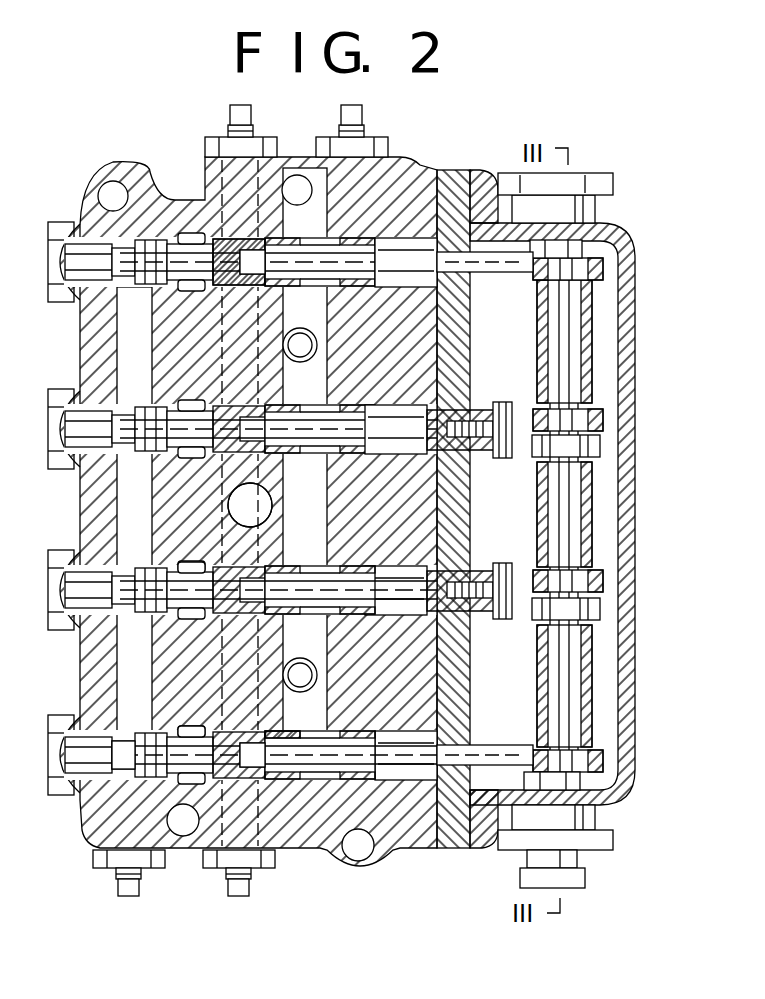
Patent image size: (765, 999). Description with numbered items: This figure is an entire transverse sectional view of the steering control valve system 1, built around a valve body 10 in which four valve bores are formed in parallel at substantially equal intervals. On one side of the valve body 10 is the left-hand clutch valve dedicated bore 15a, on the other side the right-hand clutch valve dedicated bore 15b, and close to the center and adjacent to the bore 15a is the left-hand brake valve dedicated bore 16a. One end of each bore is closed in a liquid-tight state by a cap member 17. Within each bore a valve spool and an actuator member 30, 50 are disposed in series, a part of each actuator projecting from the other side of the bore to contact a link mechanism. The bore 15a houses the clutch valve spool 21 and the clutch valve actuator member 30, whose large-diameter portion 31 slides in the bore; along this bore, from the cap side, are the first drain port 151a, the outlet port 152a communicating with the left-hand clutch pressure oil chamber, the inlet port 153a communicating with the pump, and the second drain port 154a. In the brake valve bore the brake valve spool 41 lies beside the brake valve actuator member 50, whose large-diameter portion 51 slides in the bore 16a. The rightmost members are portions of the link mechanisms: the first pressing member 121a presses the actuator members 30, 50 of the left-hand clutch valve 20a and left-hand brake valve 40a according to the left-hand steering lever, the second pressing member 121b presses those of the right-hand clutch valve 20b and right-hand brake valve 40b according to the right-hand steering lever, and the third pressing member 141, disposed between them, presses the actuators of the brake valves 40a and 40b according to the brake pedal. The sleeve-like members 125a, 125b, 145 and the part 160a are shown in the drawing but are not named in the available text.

The fuel injection pump 1 is at (420, 160).
The valve body 10 is at (425, 170).
The right-hand clutch valve 20b is at (213, 220).
The left-hand clutch valve 20a is at (262, 790).
The clutch valve actuator member 30 is at (404, 238).
The large-diameter portion 31 is at (412, 767).
The brake valve actuator member 50 is at (400, 405).
The large-diameter portion 51 is at (402, 602).
The cap member 17 is at (58, 296).
The right-hand clutch valve dedicated bore 15b is at (205, 287).
The left-hand clutch valve dedicated bore 15a is at (363, 780).
The right-hand brake valve 40b is at (187, 405).
The left-hand brake valve 40a is at (190, 620).
The brake valve spool 41 is at (194, 602).
The clutch valve spool 21 is at (236, 755).
The left-hand brake valve dedicated bore 16a is at (213, 565).
The pin 160a is at (177, 567).
The outlet port 152a is at (176, 722).
The inlet port 153a is at (230, 724).
The second drain port 154a is at (307, 782).
The first drain port 151a is at (128, 788).
The first pressing member 121a is at (535, 752).
The second pressing member 121b is at (537, 284).
The lower spacer sleeve 125a is at (537, 662).
The upper spacer sleeve 125b is at (537, 350).
The center spacer sleeve 145 is at (537, 476).
The third pressing member 141 is at (535, 578).